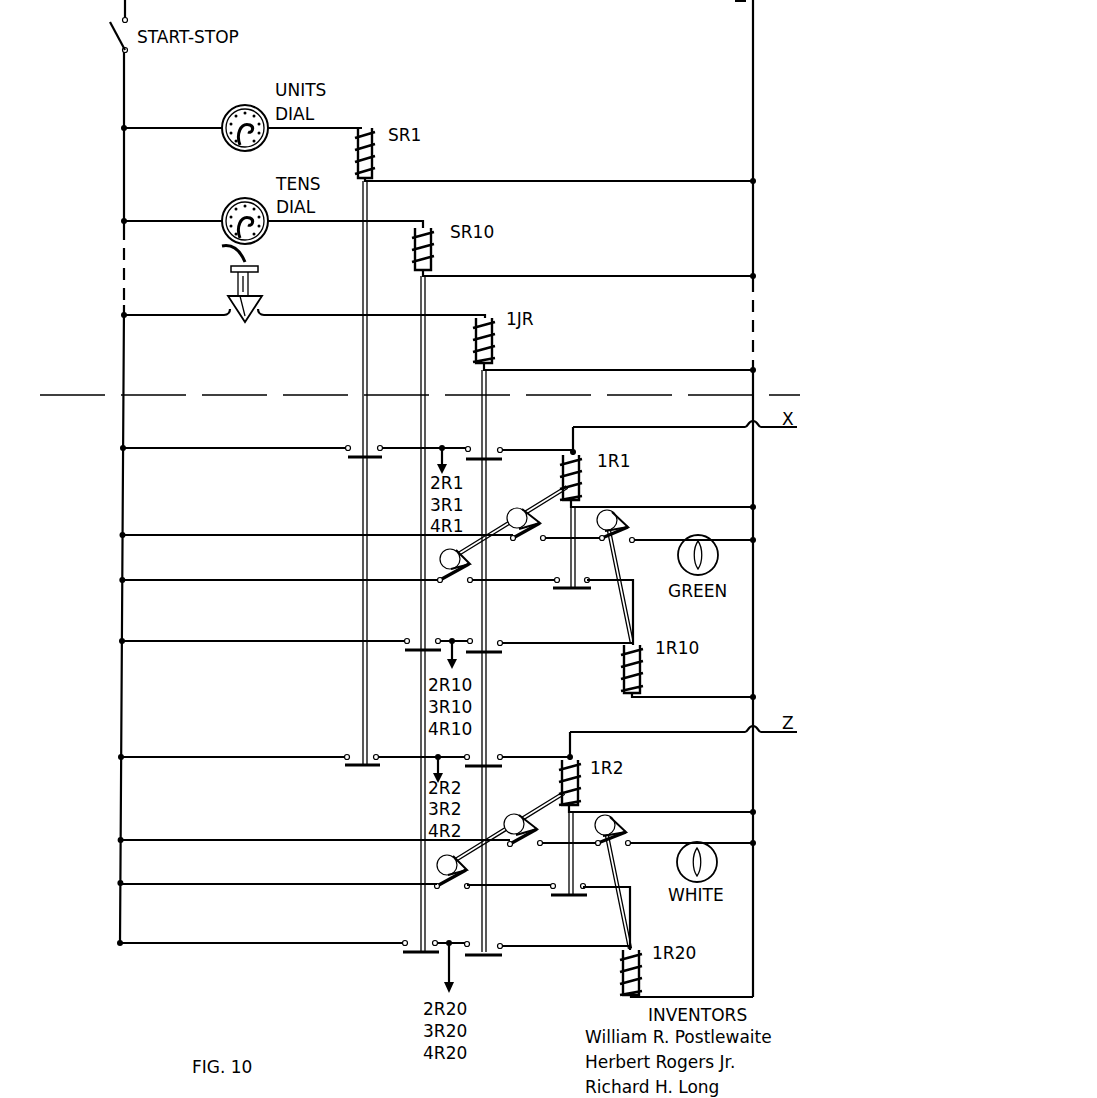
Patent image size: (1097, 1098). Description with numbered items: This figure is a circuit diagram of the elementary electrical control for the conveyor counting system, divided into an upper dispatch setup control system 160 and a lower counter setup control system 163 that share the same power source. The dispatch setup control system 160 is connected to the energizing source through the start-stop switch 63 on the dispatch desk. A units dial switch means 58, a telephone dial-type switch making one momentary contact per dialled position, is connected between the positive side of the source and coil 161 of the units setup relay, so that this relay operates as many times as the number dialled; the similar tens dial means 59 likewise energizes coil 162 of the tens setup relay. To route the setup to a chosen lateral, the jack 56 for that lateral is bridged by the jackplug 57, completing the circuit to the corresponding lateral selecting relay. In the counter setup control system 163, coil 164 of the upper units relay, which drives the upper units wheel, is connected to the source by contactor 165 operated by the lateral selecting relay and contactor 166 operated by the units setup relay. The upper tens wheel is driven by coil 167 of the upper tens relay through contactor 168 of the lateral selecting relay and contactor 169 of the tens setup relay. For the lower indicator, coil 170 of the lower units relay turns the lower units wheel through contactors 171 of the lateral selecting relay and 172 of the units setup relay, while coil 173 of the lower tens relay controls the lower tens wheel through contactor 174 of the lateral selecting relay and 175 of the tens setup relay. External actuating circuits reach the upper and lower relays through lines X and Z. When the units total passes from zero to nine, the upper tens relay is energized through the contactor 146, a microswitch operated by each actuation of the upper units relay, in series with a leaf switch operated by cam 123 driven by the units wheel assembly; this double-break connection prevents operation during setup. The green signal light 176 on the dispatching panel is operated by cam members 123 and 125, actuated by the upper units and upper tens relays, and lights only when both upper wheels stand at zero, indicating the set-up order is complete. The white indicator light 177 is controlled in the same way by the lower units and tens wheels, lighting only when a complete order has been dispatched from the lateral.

The start-stop switch 63 is at (113, 44).
The dispatch setup control system 160 is at (83, 111).
The counter setup control system 163 is at (83, 482).
The units dial switch means 58 is at (243, 106).
The tens dial means 59 is at (245, 199).
The jackplug 57 is at (252, 290).
The jack 56 is at (262, 310).
The coil of relay SR1 161 is at (368, 128).
The coil of relay SR10 162 is at (430, 226).
The contactor operated by SR1 166 is at (371, 454).
The contactor operated by relay 1JR 165 is at (492, 455).
The coil of relay 1R1 164 is at (581, 477).
The cam 123 is at (440, 560).
The cam member 125 is at (616, 516).
The green signal light 176 is at (704, 540).
The contactor 146 is at (560, 586).
The contactor of the SR10 relay 169 is at (430, 647).
The contactor of the 1JR relay 168 is at (492, 650).
The coil of relay 1R10 167 is at (639, 648).
The contactor of SR1 172 is at (366, 763).
The contactor of 1JR 171 is at (490, 763).
The coil of relay 1R2 170 is at (572, 763).
The white indicator light 177 is at (701, 843).
The contactor of SR10 175 is at (427, 951).
The contactor of 1JR 174 is at (490, 952).
The coil of relay 1R20 173 is at (636, 950).